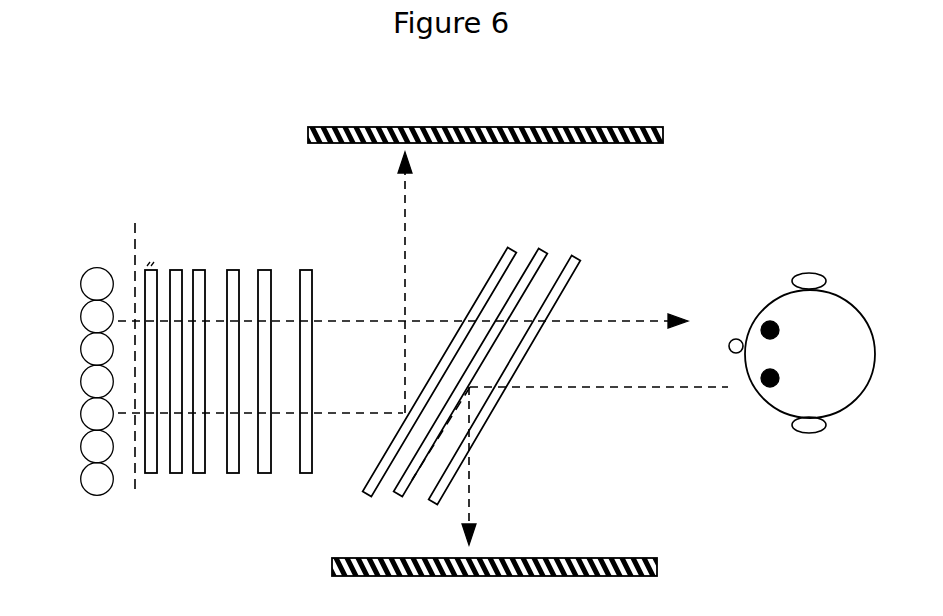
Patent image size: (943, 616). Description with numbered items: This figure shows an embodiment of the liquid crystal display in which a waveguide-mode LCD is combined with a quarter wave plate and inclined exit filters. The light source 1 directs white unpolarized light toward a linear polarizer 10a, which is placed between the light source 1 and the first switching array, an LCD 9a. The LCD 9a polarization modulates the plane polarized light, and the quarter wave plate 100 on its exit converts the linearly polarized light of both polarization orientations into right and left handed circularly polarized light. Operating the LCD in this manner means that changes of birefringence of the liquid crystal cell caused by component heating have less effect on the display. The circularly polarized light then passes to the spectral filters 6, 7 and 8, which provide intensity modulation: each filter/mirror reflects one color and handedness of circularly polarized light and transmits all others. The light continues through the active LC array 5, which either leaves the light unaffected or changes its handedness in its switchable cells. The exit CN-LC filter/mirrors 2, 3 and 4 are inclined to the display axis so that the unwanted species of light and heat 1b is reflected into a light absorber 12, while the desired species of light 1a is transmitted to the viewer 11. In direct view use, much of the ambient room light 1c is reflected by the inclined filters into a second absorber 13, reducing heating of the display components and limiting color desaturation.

The light source 1 is at (82, 277).
The desired species of light 1a is at (625, 322).
The unwanted species of light and heat 1b is at (402, 263).
The ambient room light 1c is at (557, 390).
The first CN-LC filter/mirror 2 is at (577, 257).
The second CN-LC filter/mirror 3 is at (537, 248).
The third CN-LC filter/mirror 4 is at (375, 493).
The first LC-VRA 5 is at (305, 478).
The CN-LC filter/mirror 6 is at (260, 478).
The CN-LC filter/mirror 7 is at (238, 272).
The CN-LC filter/mirror 8 is at (205, 272).
The LCD switching array 9a is at (152, 478).
The linear polarizer 10a is at (130, 280).
The viewer 11 is at (777, 298).
The light absorber 12 is at (308, 128).
The light absorber 13 is at (657, 562).
The quarter wave plate 100 is at (170, 273).